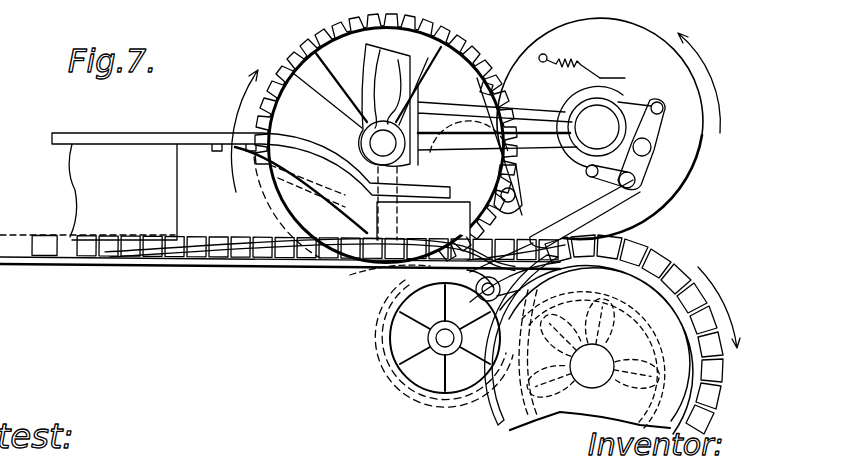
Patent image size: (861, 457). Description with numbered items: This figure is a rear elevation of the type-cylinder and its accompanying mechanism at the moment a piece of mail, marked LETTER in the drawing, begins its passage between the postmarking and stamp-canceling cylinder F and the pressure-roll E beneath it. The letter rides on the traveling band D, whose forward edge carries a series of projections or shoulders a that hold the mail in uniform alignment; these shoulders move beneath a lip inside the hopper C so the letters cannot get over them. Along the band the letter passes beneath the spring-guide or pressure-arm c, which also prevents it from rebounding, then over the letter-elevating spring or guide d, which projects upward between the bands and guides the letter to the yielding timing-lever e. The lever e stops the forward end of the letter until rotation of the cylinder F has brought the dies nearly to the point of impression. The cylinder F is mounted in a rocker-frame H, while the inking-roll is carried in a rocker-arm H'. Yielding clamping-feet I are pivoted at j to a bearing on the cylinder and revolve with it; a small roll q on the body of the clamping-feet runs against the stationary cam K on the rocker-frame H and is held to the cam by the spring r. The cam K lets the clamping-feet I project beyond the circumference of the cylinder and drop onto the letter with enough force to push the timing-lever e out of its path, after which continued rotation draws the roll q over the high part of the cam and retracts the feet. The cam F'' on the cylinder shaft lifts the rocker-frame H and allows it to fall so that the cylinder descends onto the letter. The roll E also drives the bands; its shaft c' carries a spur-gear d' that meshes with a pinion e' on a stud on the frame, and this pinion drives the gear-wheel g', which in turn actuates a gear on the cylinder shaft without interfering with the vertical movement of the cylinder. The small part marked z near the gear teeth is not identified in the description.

The hopper C is at (96, 137).
The projections or shoulders a is at (40, 237).
The traveling band D is at (280, 276).
The letter strip LETTER is at (259, 252).
The gear-wheel g' is at (374, 138).
The rocker-arm H' is at (376, 105).
The rocker-frame H is at (497, 125).
The stop z is at (502, 141).
The postmarking and stamp-canceling cylinder F is at (608, 128).
The spring r is at (569, 63).
The stationary cam K is at (612, 72).
The cam F'' is at (591, 127).
The small roll q is at (651, 147).
The pivot j is at (636, 182).
The clamping-feet I is at (562, 212).
The timing-lever e is at (508, 199).
The spring-guide or pressure-arm c is at (316, 193).
The spur-gear d' is at (443, 357).
The letter-elevating spring or guide d is at (492, 284).
The pinion e' is at (444, 343).
The pressure-roll E is at (500, 412).
The shaft c' is at (620, 350).